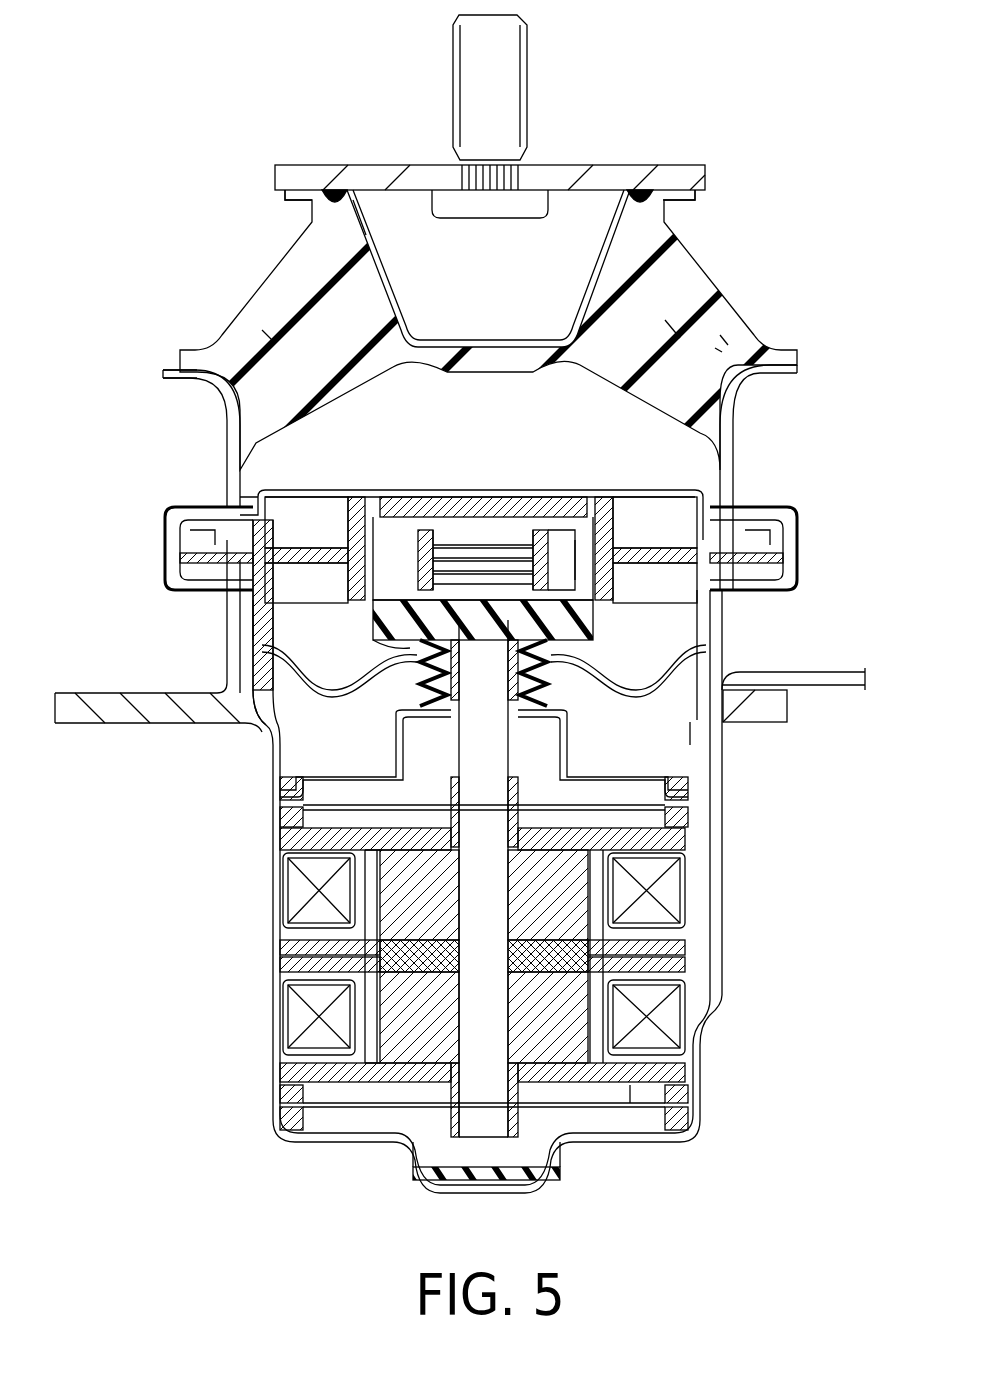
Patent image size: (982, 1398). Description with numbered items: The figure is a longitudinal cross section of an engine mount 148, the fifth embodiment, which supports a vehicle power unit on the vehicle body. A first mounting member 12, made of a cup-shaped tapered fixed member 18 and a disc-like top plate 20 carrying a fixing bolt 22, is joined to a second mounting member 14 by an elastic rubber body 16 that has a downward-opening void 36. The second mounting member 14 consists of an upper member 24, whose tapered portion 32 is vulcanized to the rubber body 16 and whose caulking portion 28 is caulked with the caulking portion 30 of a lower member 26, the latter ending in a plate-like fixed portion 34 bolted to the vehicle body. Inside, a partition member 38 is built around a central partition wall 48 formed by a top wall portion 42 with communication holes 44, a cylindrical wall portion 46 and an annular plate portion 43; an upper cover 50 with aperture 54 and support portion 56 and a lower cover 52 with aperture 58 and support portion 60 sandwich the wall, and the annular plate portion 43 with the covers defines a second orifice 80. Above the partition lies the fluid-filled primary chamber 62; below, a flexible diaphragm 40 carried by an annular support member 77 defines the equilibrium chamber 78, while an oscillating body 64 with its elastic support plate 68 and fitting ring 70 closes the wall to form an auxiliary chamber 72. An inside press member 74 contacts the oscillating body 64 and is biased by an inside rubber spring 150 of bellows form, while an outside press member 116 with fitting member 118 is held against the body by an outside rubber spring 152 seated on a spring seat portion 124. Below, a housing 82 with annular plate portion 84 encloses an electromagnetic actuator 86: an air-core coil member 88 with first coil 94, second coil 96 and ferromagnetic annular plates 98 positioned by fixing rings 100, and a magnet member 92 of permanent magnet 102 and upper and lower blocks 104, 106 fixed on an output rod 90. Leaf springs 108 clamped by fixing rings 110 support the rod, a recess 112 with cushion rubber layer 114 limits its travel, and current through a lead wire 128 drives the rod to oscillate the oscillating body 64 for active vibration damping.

The first mounting member 12 is at (650, 148).
The second mounting member 14 is at (215, 447).
The elastic rubber body 16 is at (273, 310).
The fixed member 18 is at (623, 225).
The top plate 20 is at (312, 175).
The fixing bolt 22 is at (512, 75).
The upper member 24 is at (735, 470).
The lower member 26 is at (237, 678).
The caulking portion 28 is at (185, 580).
The caulking portion 30 is at (775, 580).
The tapered portion 32 is at (215, 395).
The fixed portion 34 is at (150, 723).
The void 36 is at (665, 330).
The partition member 38 is at (340, 470).
The flexible diaphragm 40 is at (745, 722).
The top wall portion 42 is at (520, 500).
The annular plate portion 43 is at (295, 550).
The communication holes 44 is at (725, 342).
The cylindrical wall portion 46 is at (604, 530).
The central partition wall 48 is at (462, 488).
The upper cover 50 is at (308, 480).
The lower cover 52 is at (660, 637).
The large-diameter aperture 54 is at (377, 520).
The support portion 56 is at (227, 520).
The large-diameter aperture 58 is at (653, 653).
The support portion 60 is at (740, 520).
The primary chamber 62 is at (720, 350).
The oscillating body 64 is at (555, 575).
The elastic support plate 68 is at (571, 478).
The fitting ring 70 is at (690, 590).
The auxiliary chamber 72 is at (680, 560).
The inside press member 74 is at (498, 540).
The annular support member 77 is at (200, 540).
The equilibrium chamber 78 is at (250, 720).
The second orifice 80 is at (258, 618).
The housing 82 is at (727, 890).
The annular plate portion 84 is at (212, 580).
The electromagnetic actuator 86 is at (250, 1020).
The air-core coil member 88 is at (630, 1090).
The output rod 90 is at (487, 1140).
The magnet member 92 is at (425, 1090).
The first coil 94 is at (300, 888).
The second coil 96 is at (300, 1012).
The annular plates 98 is at (685, 833).
The fixing rings 100 is at (688, 800).
The permanent magnet 102 is at (560, 1090).
The upper block 104 is at (545, 860).
The lower block 106 is at (550, 1110).
The leaf spring 108 is at (300, 790).
The fixing rings 110 is at (450, 793).
The recess 112 is at (470, 1190).
The cushion rubber layer 114 is at (487, 1180).
The outside press member 116 is at (420, 680).
The fitting member 118 is at (690, 722).
The spring seat portion 124 is at (548, 685).
The lead wire 128 is at (820, 680).
The engine mount 148 is at (353, 88).
The inside rubber spring 150 is at (432, 520).
The outside rubber spring 152 is at (280, 705).